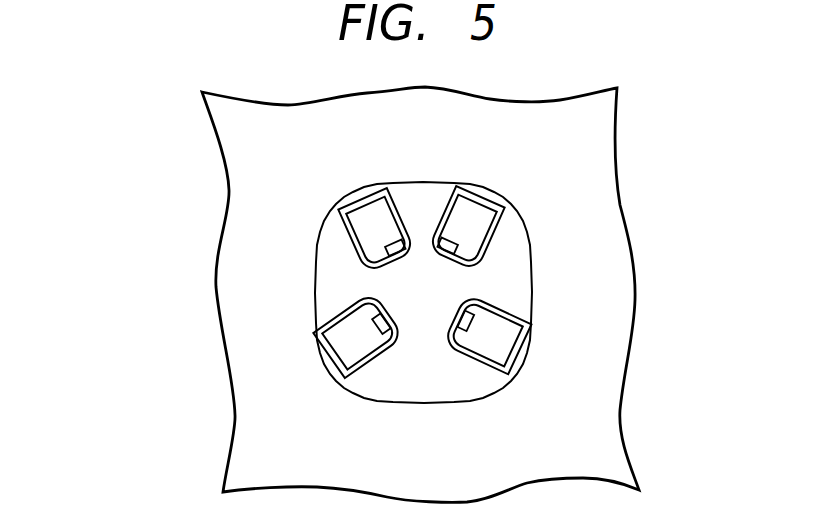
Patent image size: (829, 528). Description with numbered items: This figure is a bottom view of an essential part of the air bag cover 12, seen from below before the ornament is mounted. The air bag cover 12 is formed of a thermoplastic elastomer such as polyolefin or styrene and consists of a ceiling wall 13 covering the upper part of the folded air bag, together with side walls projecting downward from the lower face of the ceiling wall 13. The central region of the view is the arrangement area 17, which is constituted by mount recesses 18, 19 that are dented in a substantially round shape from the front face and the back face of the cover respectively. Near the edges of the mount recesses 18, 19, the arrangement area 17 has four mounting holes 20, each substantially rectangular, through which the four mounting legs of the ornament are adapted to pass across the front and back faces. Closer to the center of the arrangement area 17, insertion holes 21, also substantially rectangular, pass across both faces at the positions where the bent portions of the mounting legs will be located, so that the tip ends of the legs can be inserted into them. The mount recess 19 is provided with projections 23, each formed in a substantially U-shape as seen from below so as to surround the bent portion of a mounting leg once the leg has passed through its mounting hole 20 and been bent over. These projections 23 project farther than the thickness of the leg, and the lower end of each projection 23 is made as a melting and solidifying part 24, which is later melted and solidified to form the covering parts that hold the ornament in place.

The air bag cover 12 is at (462, 288).
The ceiling wall 13 is at (597, 115).
The arrangement area 17 is at (532, 211).
The mount recess 18 is at (426, 388).
The mount recess 19 is at (517, 270).
The mounting hole 20 is at (380, 290).
The insertion hole 21 is at (455, 253).
The projection 23 is at (344, 290).
The melting and solidifying part 24 is at (443, 207).